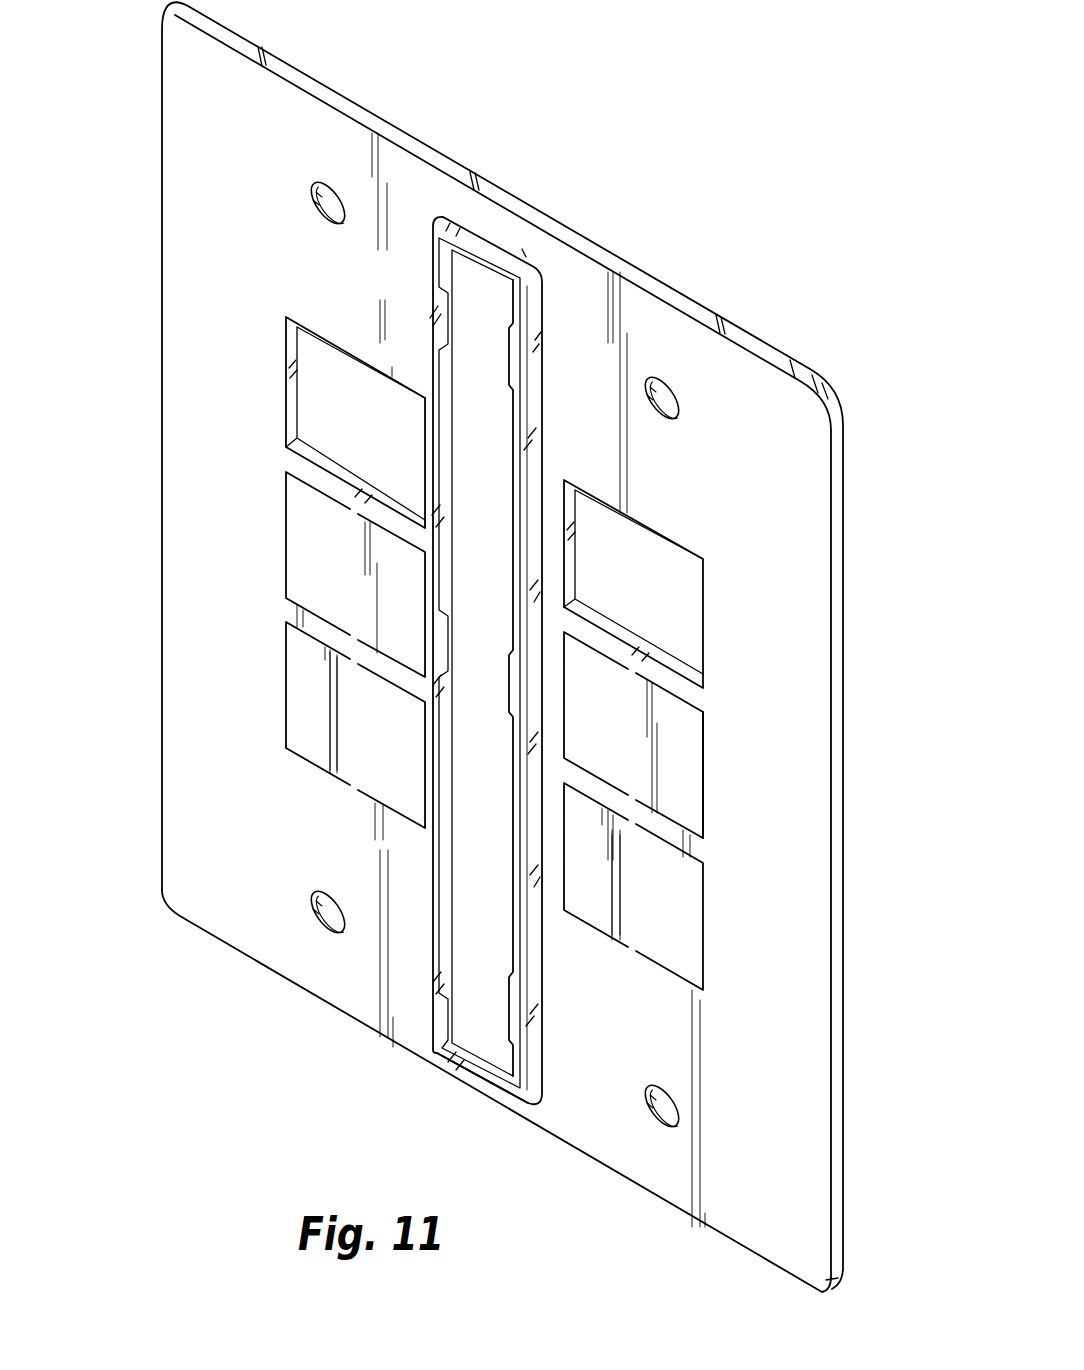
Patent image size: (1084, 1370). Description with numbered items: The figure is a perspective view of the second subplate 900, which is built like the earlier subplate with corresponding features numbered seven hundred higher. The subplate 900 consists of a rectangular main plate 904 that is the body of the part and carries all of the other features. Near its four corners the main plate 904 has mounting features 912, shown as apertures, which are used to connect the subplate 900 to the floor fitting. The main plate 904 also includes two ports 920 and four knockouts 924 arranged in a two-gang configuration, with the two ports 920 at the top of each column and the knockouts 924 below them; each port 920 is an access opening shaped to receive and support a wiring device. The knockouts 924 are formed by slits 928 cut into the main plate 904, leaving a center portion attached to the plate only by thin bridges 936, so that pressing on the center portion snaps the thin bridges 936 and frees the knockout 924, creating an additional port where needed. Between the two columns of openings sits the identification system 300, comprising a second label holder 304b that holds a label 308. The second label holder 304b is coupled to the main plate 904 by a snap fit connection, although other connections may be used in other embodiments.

The second subplate 900 is at (689, 125).
The main plate 904 is at (803, 433).
The mounting features 912 is at (325, 196).
The identification system 300 is at (503, 216).
The second label holder 304b is at (453, 1068).
The label 308 is at (488, 806).
The ports 920 is at (310, 388).
The knockouts 924 is at (325, 566).
The slits 928 is at (705, 729).
The thin bridges 936 is at (342, 730).